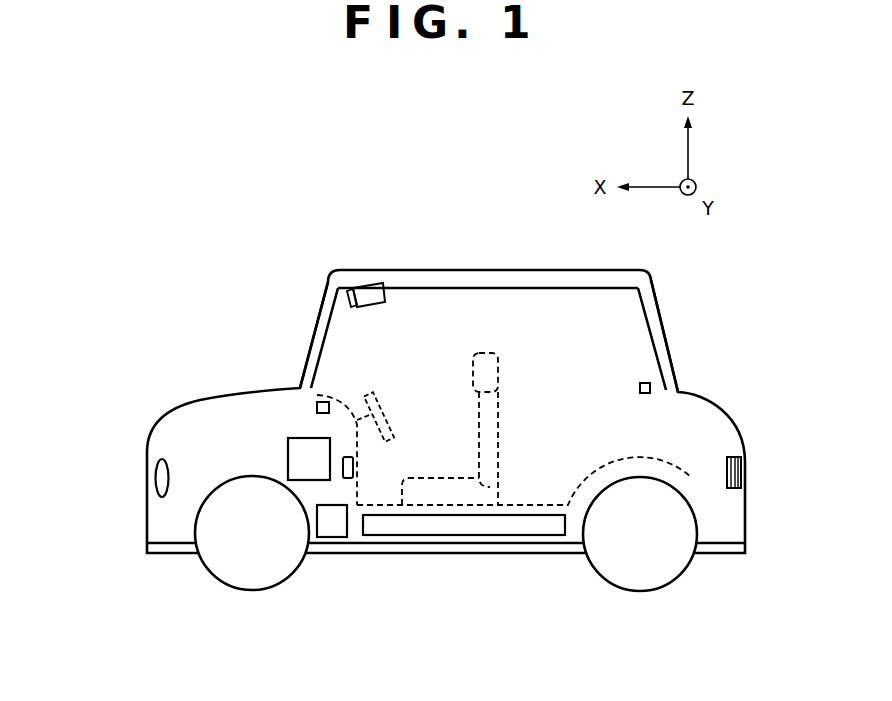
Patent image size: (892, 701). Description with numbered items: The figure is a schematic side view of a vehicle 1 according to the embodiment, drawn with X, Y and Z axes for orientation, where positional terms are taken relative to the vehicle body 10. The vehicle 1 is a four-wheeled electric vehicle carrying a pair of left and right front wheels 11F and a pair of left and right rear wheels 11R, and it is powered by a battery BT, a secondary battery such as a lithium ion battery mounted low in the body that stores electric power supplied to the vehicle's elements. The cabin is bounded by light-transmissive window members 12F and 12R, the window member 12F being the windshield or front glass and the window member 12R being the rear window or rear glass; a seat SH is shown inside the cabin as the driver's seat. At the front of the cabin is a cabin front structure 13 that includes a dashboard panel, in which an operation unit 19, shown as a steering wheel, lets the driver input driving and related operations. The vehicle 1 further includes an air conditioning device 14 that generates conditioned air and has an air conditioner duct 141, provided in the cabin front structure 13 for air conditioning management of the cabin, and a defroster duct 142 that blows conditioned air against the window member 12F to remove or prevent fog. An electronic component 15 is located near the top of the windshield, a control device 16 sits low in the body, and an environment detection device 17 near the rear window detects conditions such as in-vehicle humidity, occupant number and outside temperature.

The vehicle 1 is at (213, 191).
The vehicle body 10 is at (745, 515).
The front wheels 11F is at (250, 592).
The rear wheels 11R is at (642, 592).
The window member 12F is at (317, 320).
The window member 12R is at (662, 323).
The cabin front structure 13 is at (340, 390).
The air conditioning device 14 is at (288, 460).
The air conditioner duct 141 is at (343, 476).
The defroster duct 142 is at (317, 407).
The electronic component 15 is at (362, 282).
The control device 16 is at (330, 537).
The environment detection device 17 is at (652, 388).
The operation unit 19 is at (392, 402).
The seat SH is at (499, 410).
The battery BT is at (473, 536).